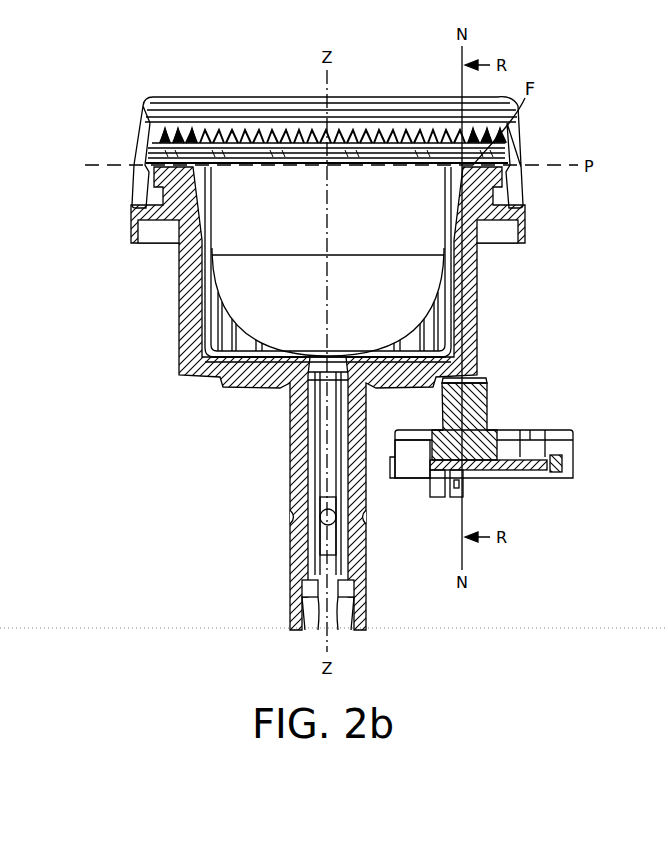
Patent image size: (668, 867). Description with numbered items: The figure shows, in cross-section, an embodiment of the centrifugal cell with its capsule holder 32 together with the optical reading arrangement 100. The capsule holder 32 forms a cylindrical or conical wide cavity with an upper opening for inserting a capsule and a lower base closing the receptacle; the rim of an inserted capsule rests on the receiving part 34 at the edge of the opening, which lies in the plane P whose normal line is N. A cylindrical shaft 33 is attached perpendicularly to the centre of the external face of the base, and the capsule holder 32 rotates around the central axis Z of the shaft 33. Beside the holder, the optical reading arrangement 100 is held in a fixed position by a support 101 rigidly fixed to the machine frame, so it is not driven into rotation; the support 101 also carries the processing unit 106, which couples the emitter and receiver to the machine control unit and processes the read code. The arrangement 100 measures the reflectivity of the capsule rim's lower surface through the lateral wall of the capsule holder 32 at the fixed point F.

The capsule holder 32 is at (192, 272).
The cylindrical shaft 33 is at (324, 428).
The receiving part 34 is at (200, 166).
The optical reading arrangement 100 is at (518, 453).
The support 101 is at (411, 478).
The processing unit 106 is at (530, 471).